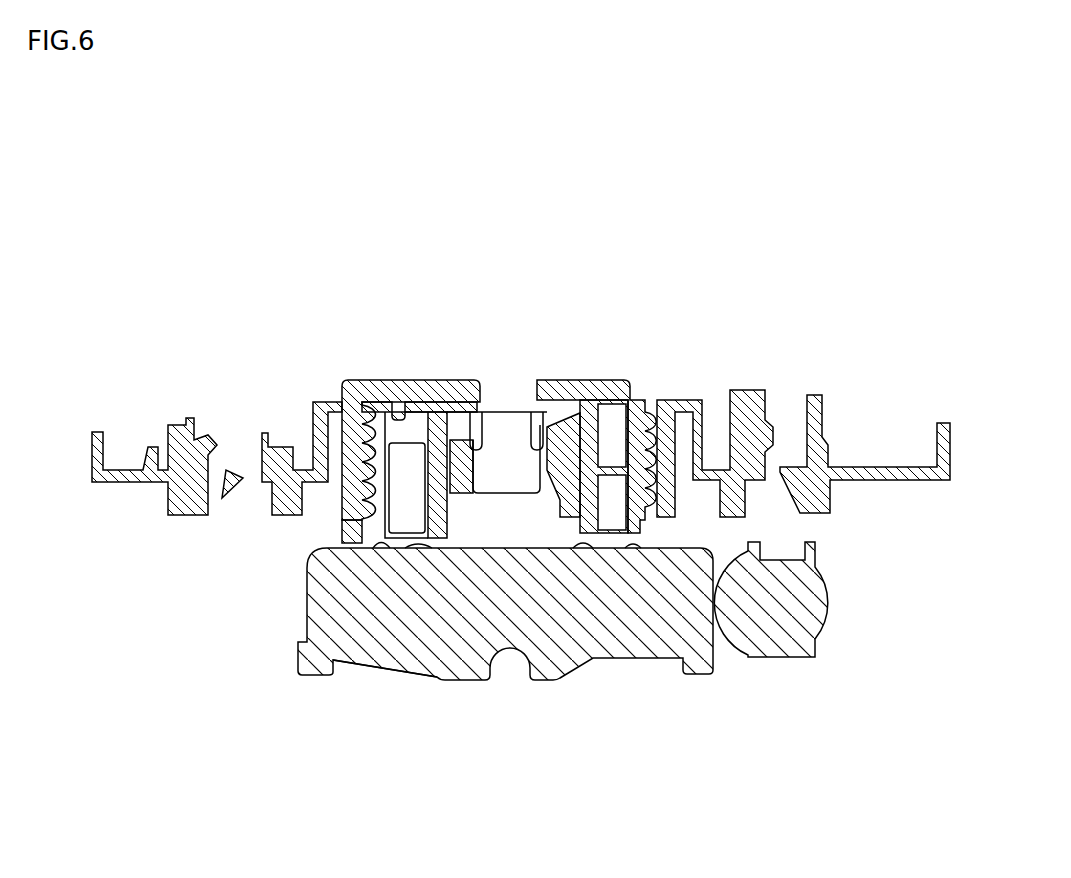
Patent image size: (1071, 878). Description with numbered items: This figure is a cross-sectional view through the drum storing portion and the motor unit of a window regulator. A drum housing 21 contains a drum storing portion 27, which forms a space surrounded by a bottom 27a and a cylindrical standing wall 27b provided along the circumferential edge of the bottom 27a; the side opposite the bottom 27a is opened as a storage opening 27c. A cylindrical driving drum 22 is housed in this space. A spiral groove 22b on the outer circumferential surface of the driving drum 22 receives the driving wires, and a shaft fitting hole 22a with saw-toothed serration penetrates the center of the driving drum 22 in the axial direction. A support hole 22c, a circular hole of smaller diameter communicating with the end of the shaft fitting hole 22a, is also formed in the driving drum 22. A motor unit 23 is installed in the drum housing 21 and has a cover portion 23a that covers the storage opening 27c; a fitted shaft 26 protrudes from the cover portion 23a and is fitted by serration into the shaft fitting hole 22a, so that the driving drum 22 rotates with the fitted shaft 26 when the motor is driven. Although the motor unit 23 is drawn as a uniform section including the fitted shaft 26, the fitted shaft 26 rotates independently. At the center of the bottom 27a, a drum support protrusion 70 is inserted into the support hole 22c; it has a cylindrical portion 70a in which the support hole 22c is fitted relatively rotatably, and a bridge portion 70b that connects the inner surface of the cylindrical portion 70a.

The drum housing 21 is at (329, 370).
The driving drum 22 is at (632, 412).
The shaft fitting hole 22a is at (465, 408).
The spiral groove 22b is at (360, 457).
The support hole 22c is at (468, 432).
The motor unit 23 is at (648, 665).
The cover portion 23a is at (463, 660).
The fitted shaft 26 is at (474, 466).
The drum storing portion 27 is at (595, 378).
The bottom 27a is at (392, 400).
The cylindrical standing wall 27b is at (352, 503).
The storage opening 27c is at (355, 510).
The drum support protrusion 70 is at (563, 300).
The cylindrical portion 70a is at (528, 412).
The bridge portion 70b is at (505, 412).